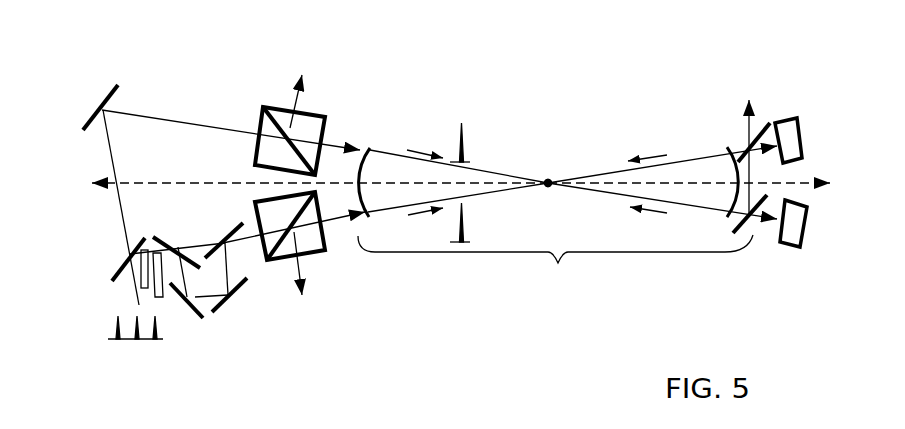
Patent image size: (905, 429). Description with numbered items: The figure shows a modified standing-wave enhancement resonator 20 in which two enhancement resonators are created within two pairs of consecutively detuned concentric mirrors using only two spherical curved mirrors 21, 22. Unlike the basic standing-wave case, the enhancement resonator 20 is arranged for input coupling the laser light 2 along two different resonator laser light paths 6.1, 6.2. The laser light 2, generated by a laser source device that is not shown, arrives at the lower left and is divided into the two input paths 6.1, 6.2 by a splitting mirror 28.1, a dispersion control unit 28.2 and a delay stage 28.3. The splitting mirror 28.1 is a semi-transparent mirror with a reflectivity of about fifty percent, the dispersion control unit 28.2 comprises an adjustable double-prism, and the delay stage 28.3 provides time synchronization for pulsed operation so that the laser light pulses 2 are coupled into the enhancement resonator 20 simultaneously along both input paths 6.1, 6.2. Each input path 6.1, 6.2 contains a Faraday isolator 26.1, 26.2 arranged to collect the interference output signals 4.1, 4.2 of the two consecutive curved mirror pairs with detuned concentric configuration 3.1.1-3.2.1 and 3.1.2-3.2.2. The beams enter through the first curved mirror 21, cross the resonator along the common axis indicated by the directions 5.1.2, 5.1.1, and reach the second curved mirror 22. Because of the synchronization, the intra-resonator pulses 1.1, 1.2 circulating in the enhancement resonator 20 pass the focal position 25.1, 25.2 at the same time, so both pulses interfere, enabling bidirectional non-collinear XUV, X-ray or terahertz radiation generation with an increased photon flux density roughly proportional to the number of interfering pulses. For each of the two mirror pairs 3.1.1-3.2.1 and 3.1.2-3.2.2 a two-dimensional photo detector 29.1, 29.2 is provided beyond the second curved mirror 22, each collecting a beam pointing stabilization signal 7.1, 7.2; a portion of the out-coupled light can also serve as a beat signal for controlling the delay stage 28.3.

The laser light 2 is at (110, 338).
The intra-resonator pulse 1.1 is at (475, 222).
The intra-resonator pulse 1.2 is at (475, 142).
The curved mirror pair position 3.1.1 is at (423, 217).
The curved mirror pair position 3.1.2 is at (410, 150).
The curved mirror pair position 3.2.1 is at (643, 150).
The curved mirror pair position 3.2.2 is at (647, 217).
The interference output signal 4.1 is at (297, 292).
The interference output signal 4.2 is at (303, 78).
The resonator axis direction 5.1.1 is at (707, 164).
The resonator axis direction 5.1.2 is at (320, 166).
The input path 6.1 is at (278, 226).
The input path 6.2 is at (231, 121).
The beam pointing stabilization signal 7.1 is at (455, 238).
The beam pointing stabilization signal 7.2 is at (748, 104).
The enhancement resonator 20 is at (568, 301).
The curved mirror 21 is at (357, 200).
The curved mirror 22 is at (722, 198).
The focal position 25.1 is at (548, 182).
The focal position 25.2 is at (575, 150).
The Faraday isolator 26.1 is at (267, 260).
The Faraday isolator 26.2 is at (263, 107).
The splitting mirror 28.1 is at (113, 256).
The dispersion control unit 28.2 is at (130, 277).
The delay stage 28.3 is at (193, 290).
The two-dimensional photo detector 29.1 is at (783, 123).
The two-dimensional photo detector 29.2 is at (778, 236).